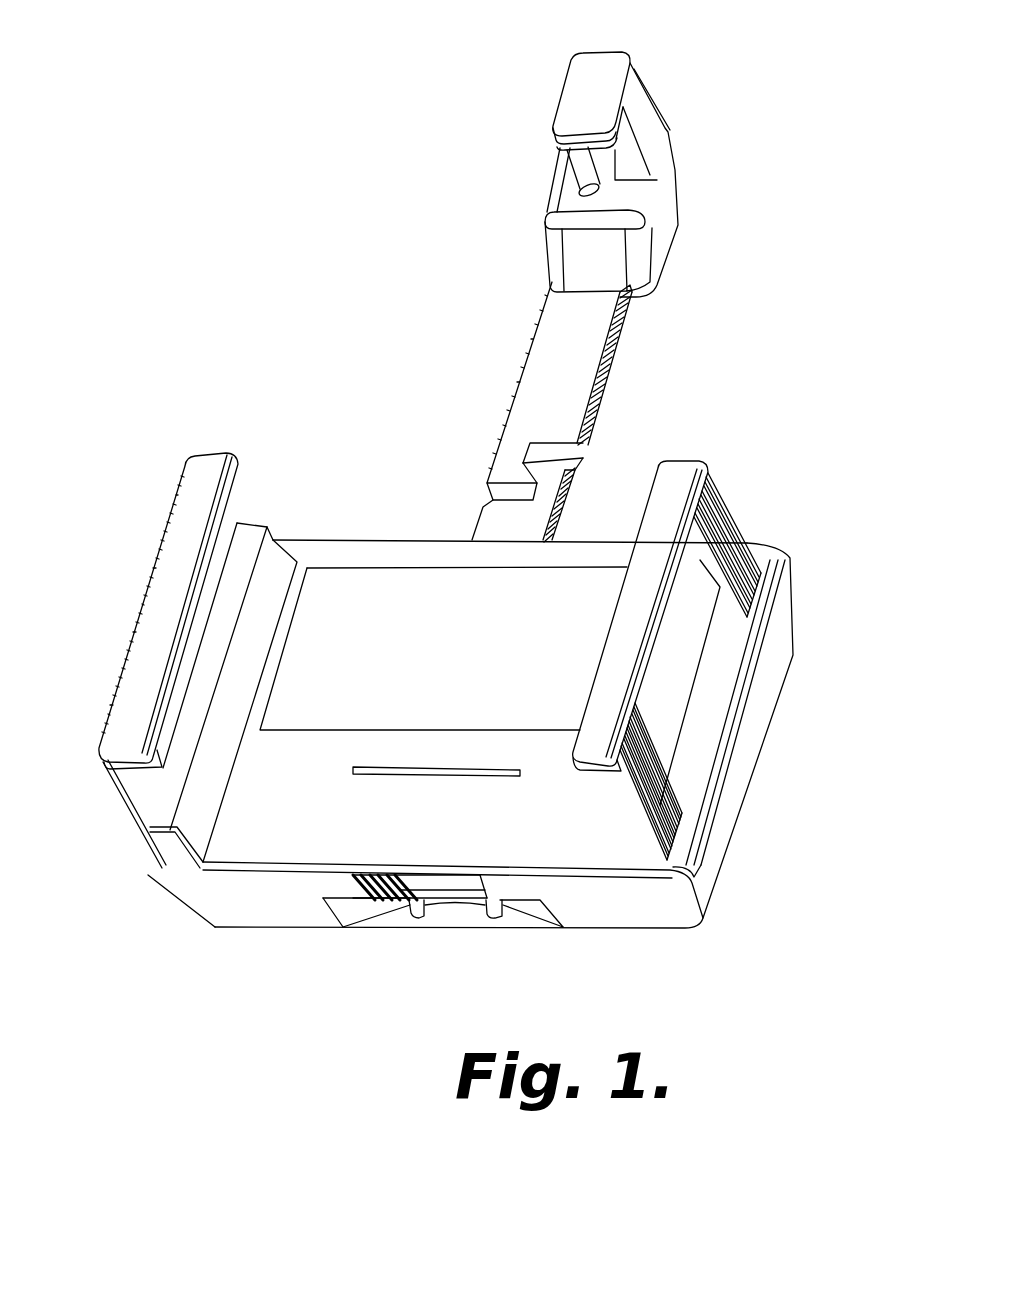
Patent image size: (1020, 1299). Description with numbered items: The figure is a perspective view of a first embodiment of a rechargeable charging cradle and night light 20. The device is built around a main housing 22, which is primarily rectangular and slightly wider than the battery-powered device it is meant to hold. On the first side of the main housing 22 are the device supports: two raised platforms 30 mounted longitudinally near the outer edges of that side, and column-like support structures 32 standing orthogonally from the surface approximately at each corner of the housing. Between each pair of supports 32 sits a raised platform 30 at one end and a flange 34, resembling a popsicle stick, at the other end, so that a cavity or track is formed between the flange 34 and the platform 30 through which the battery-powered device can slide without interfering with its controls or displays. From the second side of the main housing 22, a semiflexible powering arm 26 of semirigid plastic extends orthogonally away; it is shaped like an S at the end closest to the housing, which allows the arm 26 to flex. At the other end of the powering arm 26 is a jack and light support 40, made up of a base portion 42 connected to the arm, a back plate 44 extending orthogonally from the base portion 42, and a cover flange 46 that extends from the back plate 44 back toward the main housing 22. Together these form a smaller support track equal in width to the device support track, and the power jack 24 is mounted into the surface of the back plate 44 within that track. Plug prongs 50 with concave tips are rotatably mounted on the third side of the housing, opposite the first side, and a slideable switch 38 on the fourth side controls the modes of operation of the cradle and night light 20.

The rechargeable charging cradle and night light 20 is at (218, 355).
The main housing 22 is at (808, 672).
The power jack 24 is at (590, 184).
The semiflexible powering arm 26 is at (512, 395).
The raised platform 30 is at (683, 677).
The support structure 32 is at (235, 522).
The flange 34 is at (205, 487).
The slideable switch 38 is at (472, 882).
The jack and light support 40 is at (658, 73).
The base portion 42 is at (625, 199).
The back plate 44 is at (632, 145).
The cover flange 46 is at (593, 95).
The plug prongs 50 is at (407, 906).